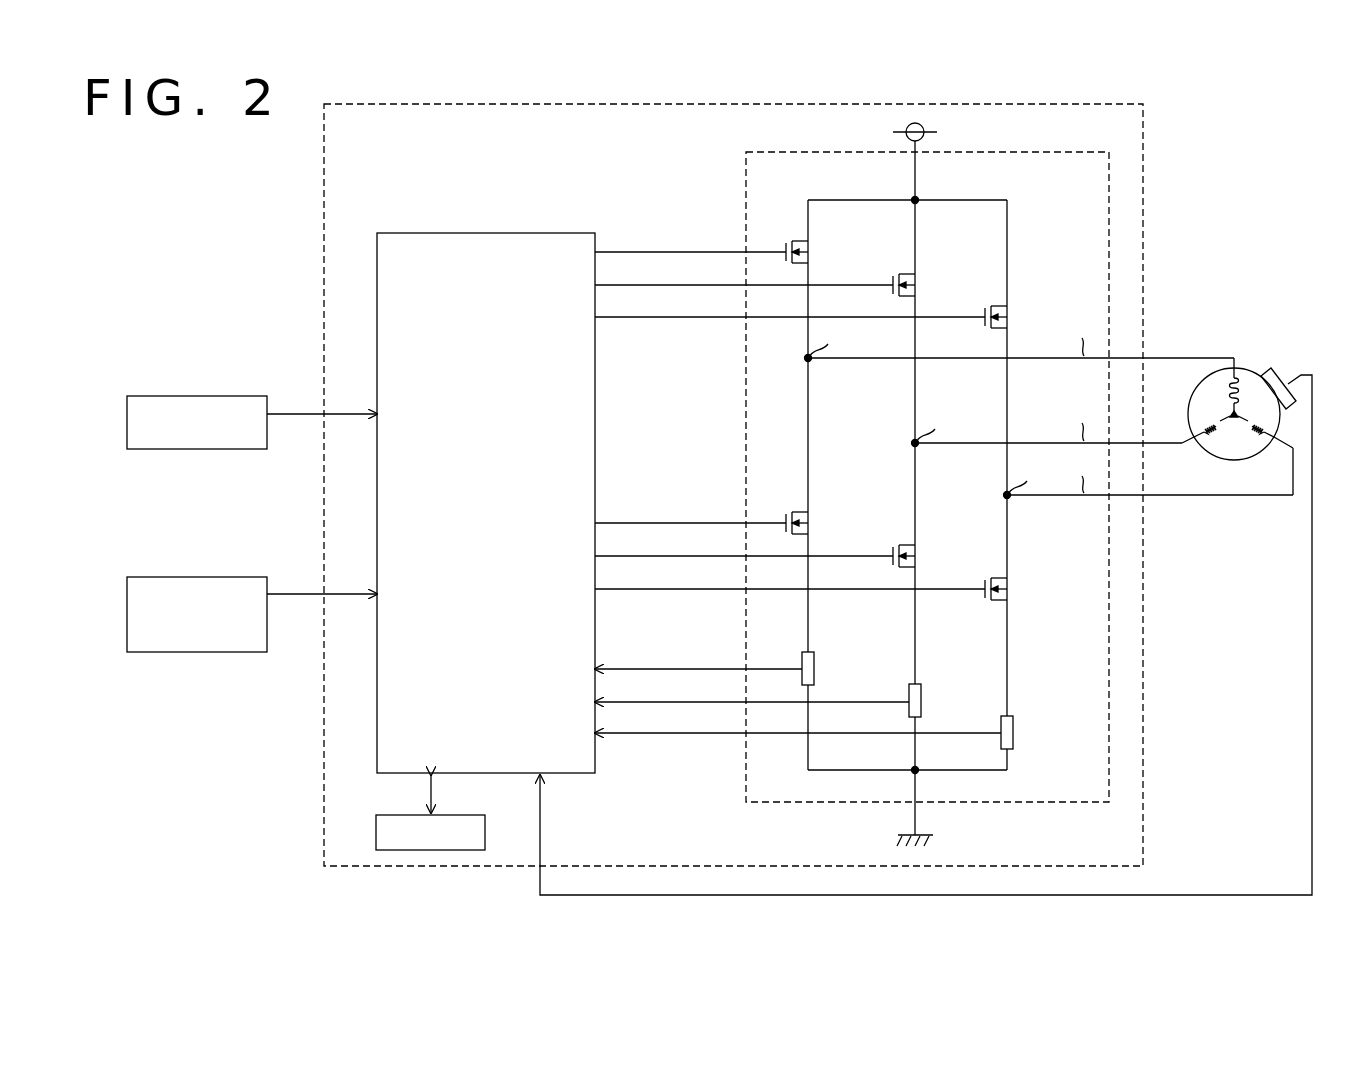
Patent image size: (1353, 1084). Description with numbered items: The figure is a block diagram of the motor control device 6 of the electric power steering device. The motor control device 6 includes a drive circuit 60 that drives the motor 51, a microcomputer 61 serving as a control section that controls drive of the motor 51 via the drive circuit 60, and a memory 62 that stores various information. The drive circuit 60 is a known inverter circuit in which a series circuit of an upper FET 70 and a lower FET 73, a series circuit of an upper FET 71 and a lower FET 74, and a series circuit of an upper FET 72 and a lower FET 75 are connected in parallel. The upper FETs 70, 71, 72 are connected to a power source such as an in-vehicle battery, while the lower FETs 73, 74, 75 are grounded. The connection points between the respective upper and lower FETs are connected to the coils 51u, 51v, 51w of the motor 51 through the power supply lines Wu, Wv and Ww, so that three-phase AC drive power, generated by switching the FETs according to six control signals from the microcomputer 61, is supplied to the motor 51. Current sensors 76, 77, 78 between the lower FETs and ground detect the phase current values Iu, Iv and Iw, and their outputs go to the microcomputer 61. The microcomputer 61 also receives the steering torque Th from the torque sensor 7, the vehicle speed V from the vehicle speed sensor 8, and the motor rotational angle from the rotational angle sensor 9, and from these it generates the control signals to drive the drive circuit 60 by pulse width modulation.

The motor control device 6 is at (1143, 132).
The drive circuit 60 is at (1086, 152).
The microcomputer 61 is at (487, 233).
The memory 62 is at (463, 815).
The torque sensor 7 is at (193, 396).
The vehicle speed sensor 8 is at (193, 577).
The rotational angle sensor 9 is at (1279, 368).
The motor 51 is at (1050, 406).
The U-phase coil 51u is at (1222, 385).
The V-phase coil 51v is at (1213, 440).
The W-phase coil 51w is at (1252, 440).
The upper FET 70 is at (785, 240).
The upper FET 71 is at (892, 273).
The upper FET 72 is at (984, 305).
The lower FET 73 is at (785, 511).
The lower FET 74 is at (892, 544).
The lower FET 75 is at (984, 577).
The current sensor 76 is at (814, 652).
The current sensor 77 is at (921, 684).
The current sensor 78 is at (1013, 716).